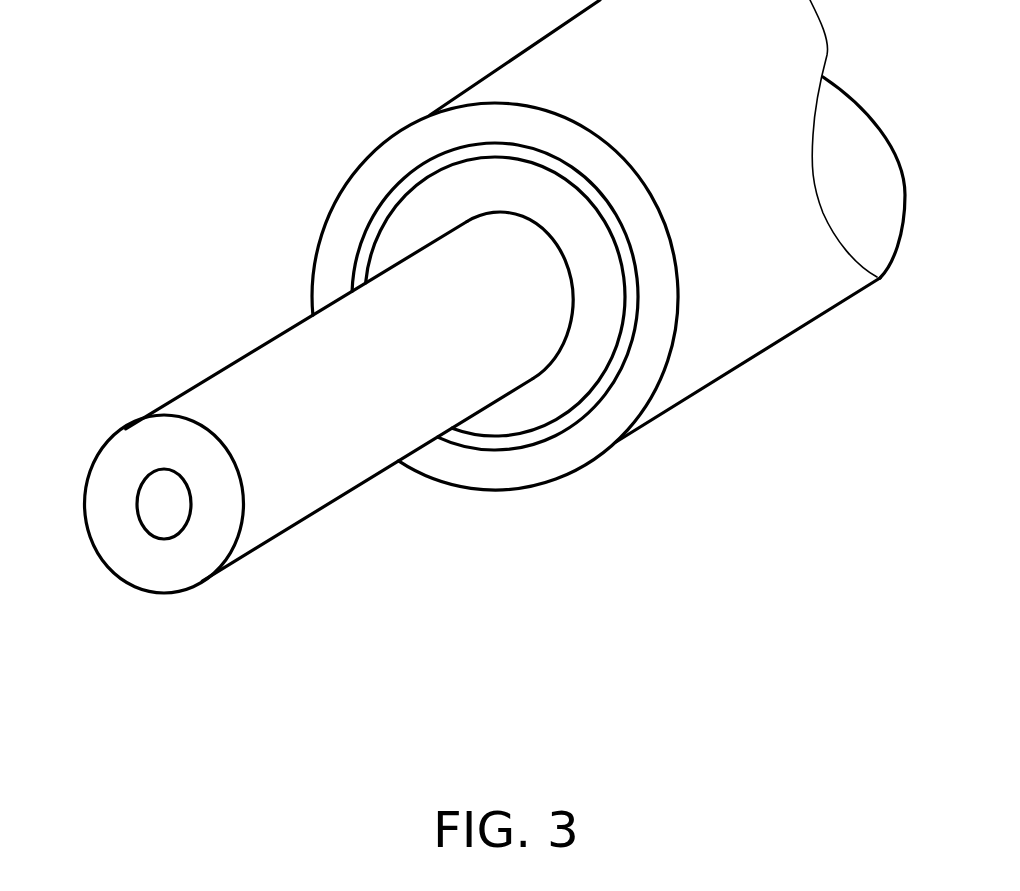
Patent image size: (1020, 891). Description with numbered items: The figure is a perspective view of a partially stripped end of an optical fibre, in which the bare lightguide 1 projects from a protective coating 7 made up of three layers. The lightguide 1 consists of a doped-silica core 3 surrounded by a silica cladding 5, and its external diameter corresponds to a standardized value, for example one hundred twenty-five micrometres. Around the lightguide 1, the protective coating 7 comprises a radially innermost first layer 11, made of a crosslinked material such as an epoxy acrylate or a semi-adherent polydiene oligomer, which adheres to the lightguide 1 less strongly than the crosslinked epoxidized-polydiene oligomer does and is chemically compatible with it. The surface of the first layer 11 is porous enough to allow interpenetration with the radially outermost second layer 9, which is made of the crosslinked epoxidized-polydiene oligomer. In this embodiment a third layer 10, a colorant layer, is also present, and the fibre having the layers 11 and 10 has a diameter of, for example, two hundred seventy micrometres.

The lightguide 1 is at (83, 520).
The doped-silica core 3 is at (153, 498).
The silica cladding 5 is at (157, 447).
The protective coating 7 is at (477, 522).
The second layer 9 is at (360, 227).
The third layer 10 is at (397, 198).
The first layer 11 is at (447, 200).